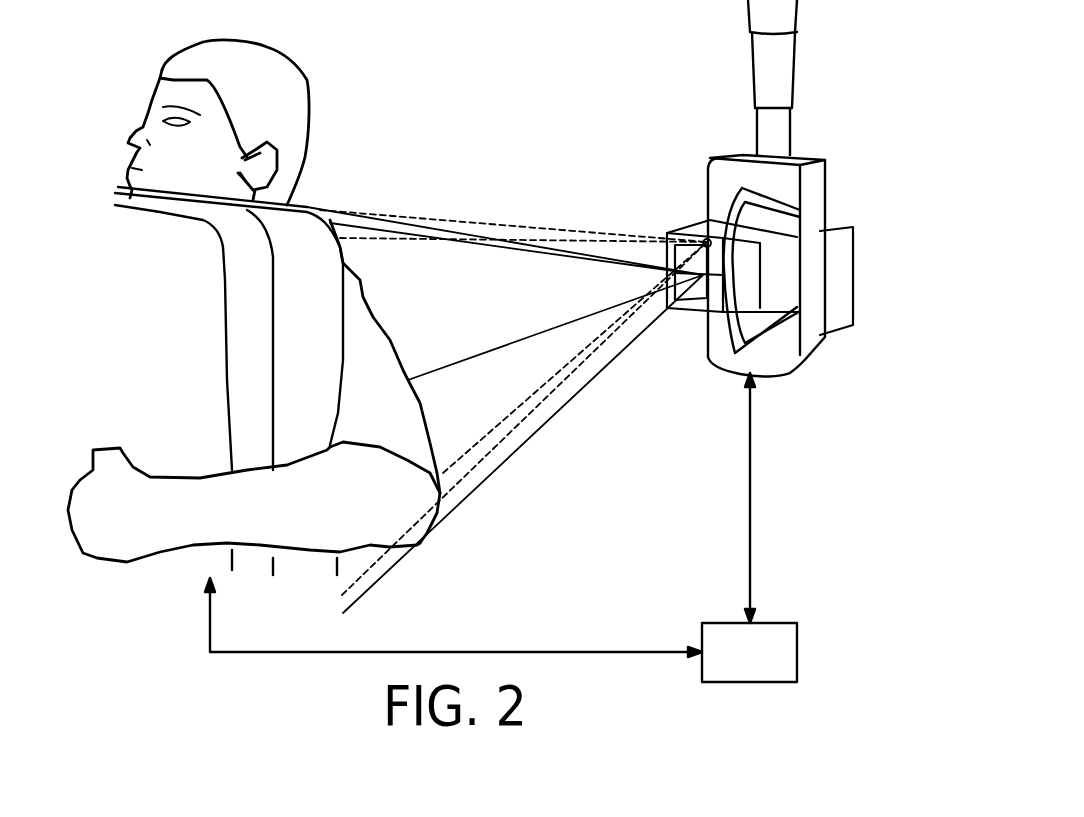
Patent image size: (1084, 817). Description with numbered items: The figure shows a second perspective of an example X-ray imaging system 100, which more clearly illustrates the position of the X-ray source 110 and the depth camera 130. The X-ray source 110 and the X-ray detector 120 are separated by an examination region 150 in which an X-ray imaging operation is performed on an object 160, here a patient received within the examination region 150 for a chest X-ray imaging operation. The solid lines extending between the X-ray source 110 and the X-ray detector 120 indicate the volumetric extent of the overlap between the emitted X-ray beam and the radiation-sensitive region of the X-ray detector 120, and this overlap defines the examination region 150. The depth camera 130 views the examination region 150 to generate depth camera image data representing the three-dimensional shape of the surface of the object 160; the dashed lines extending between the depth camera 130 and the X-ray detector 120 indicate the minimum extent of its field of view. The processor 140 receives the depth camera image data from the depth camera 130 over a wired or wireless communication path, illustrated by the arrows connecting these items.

The X-ray imaging system 100 is at (530, 78).
The X-ray source 110 is at (705, 278).
The X-ray detector 120 is at (183, 331).
The depth camera 130 is at (703, 241).
The processor 140 is at (501, 527).
The examination region 150 is at (277, 301).
The object 160 is at (353, 303).